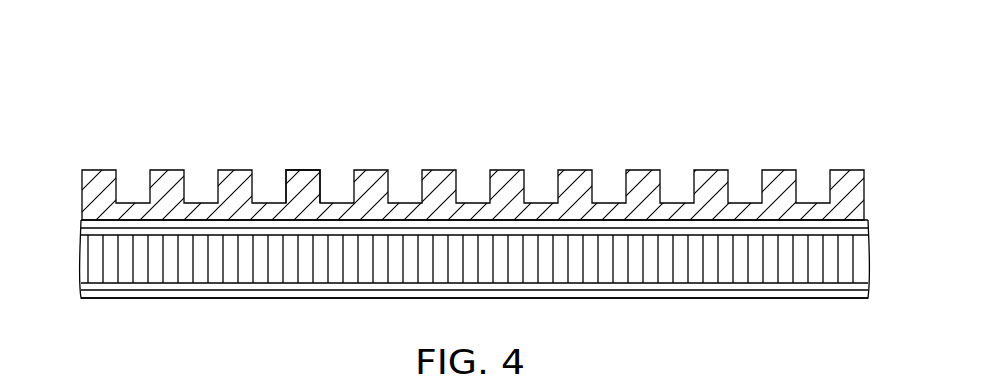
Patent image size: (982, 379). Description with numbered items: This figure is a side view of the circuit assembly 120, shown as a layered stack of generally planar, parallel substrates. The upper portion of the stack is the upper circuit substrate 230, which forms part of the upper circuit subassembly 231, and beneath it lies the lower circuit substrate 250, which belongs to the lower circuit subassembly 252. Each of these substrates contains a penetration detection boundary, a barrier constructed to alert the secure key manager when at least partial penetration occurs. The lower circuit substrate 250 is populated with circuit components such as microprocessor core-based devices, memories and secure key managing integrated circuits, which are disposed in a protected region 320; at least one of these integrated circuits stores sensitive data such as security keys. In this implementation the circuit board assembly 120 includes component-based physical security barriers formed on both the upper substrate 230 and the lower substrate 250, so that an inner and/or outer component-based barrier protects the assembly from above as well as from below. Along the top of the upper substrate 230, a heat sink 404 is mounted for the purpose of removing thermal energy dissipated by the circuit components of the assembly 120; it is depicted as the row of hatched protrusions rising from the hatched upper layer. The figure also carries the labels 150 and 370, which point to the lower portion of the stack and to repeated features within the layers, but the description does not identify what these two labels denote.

The circuit assembly 120 is at (622, 83).
The substrate stack 150 is at (80, 298).
The upper circuit substrate 230 is at (80, 224).
The upper circuit subassembly 231 is at (128, 222).
The lower circuit substrate 250 is at (150, 298).
The lower circuit subassembly 252 is at (176, 298).
The protected region 320 is at (820, 262).
The conductive vias 370 is at (273, 232).
The heat sink 404 is at (322, 188).